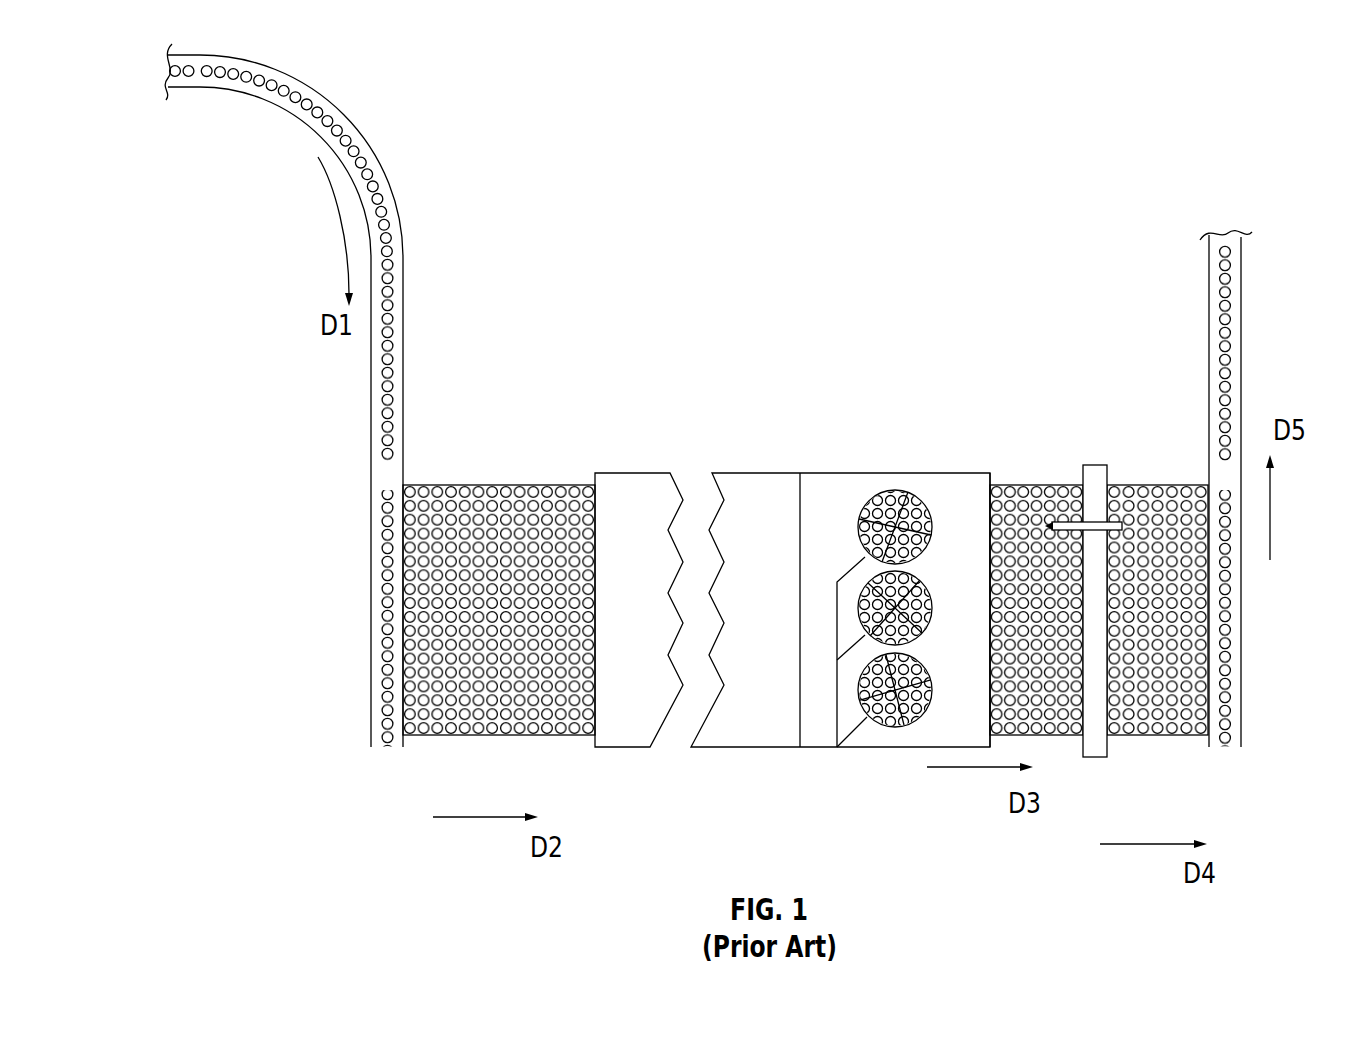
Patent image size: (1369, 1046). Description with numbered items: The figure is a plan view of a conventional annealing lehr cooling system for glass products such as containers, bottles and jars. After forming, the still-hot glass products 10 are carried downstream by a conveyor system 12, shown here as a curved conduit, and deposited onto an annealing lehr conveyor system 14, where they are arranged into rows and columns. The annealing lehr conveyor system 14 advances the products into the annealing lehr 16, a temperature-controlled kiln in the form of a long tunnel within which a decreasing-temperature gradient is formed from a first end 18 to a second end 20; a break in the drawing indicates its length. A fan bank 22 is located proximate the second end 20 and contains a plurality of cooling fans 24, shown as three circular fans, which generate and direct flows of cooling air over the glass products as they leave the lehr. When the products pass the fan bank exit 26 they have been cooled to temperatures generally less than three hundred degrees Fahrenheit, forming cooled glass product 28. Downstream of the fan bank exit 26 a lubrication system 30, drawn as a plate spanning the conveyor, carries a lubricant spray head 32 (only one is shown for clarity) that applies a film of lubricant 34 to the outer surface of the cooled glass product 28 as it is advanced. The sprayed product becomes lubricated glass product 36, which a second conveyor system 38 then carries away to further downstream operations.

The still-hot glass products 10 is at (390, 345).
The conveyor system 12 is at (310, 123).
The annealing lehr conveyor system 14 is at (487, 735).
The annealing lehr 16 is at (620, 752).
The first end 18 is at (620, 472).
The second end 20 is at (780, 472).
The fan bank 22 is at (893, 750).
The cooling fans 24 is at (927, 508).
The fan bank exit 26 is at (960, 472).
The cooled glass product 28 is at (1004, 487).
The lubrication system 30 is at (1107, 745).
The lubricant spray head 32 is at (1118, 522).
The film of lubricant 34 is at (1053, 524).
The lubricated glass product 36 is at (1165, 487).
The conveyor system 38 is at (1209, 330).